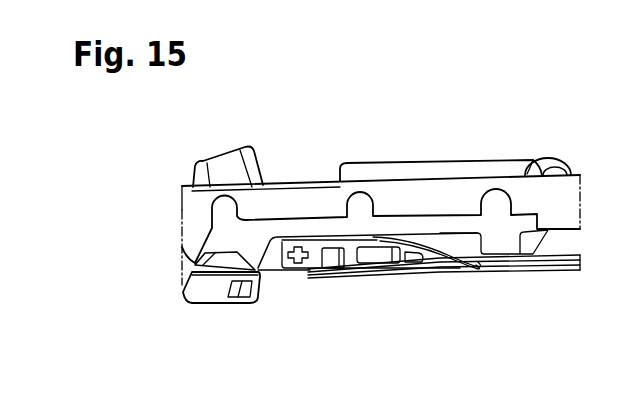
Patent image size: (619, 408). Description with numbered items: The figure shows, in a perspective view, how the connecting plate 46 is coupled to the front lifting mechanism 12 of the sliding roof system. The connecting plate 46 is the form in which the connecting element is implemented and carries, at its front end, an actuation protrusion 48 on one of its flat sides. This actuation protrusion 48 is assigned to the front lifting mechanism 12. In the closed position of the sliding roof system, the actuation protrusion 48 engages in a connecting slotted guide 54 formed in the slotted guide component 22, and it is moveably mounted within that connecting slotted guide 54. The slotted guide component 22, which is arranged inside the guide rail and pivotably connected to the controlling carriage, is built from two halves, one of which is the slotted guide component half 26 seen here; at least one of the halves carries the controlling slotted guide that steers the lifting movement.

The front lifting mechanism 12 is at (296, 130).
The slotted guide component 22 is at (520, 133).
The slotted guide component half 26 is at (442, 158).
The connecting plate 46 is at (497, 266).
The actuation protrusion 48 is at (333, 268).
The connecting slotted guide 54 is at (303, 284).